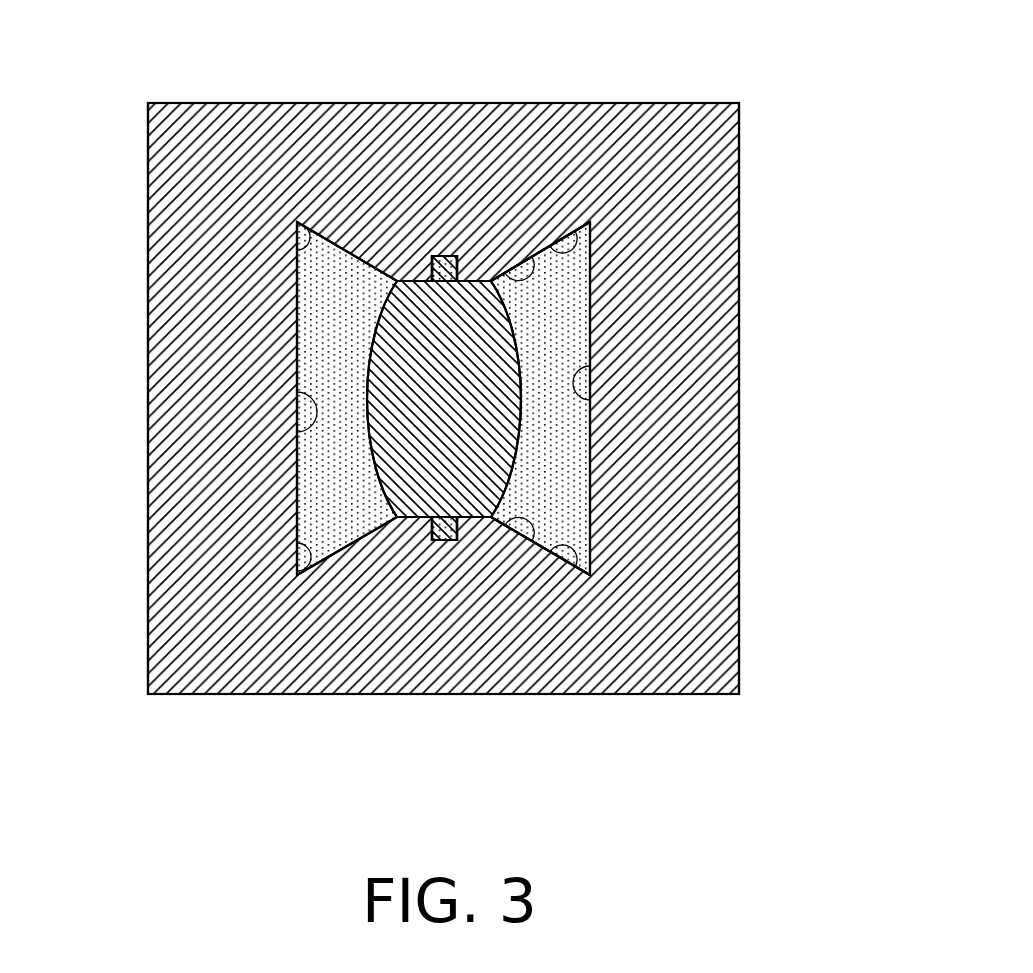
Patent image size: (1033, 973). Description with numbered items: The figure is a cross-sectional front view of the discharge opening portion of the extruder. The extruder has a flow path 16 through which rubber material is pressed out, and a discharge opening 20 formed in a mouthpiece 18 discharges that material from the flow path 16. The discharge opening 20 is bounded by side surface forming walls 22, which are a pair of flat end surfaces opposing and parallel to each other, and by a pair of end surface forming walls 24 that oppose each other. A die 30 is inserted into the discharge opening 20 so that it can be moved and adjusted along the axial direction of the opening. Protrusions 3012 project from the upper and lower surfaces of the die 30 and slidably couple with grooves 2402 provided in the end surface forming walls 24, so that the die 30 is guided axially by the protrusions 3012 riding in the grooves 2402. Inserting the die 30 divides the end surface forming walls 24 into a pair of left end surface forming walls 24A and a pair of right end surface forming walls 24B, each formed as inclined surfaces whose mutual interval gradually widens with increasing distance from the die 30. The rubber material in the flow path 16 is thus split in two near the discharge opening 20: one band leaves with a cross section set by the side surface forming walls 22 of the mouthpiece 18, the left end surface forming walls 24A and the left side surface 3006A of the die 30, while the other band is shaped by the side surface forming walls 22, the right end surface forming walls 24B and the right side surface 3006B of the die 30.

The flow path 16 is at (563, 307).
The mouthpiece 18 is at (682, 103).
The discharge opening 20 is at (640, 232).
The side surface forming walls 22 is at (297, 440).
The end surface forming walls 24 is at (528, 258).
The left end surface forming walls 24A is at (292, 248).
The right end surface forming walls 24B is at (566, 253).
The grooves 2402 is at (442, 279).
The die 30 is at (400, 332).
The protrusions 3012 is at (457, 257).
The left side surface 3006A is at (375, 452).
The right side surface 3006B is at (518, 445).